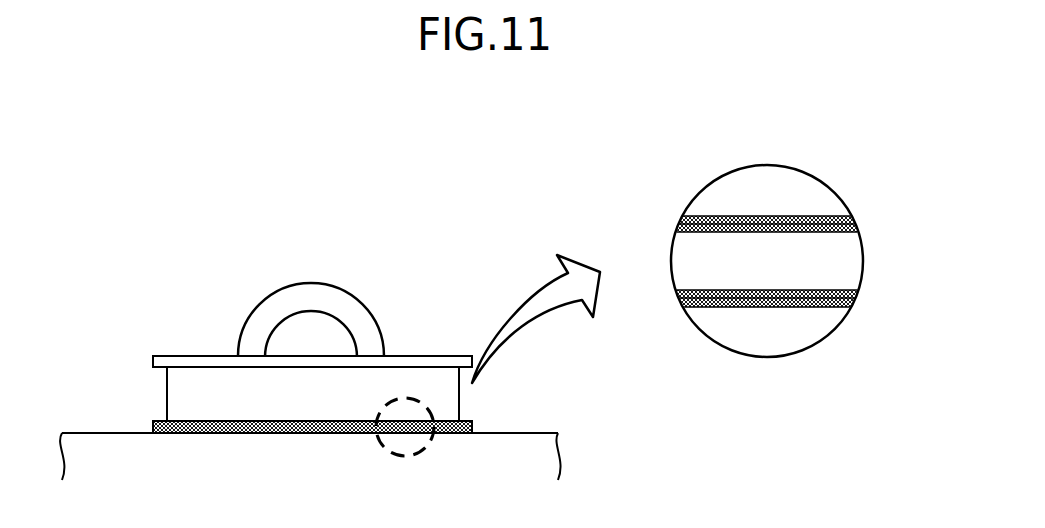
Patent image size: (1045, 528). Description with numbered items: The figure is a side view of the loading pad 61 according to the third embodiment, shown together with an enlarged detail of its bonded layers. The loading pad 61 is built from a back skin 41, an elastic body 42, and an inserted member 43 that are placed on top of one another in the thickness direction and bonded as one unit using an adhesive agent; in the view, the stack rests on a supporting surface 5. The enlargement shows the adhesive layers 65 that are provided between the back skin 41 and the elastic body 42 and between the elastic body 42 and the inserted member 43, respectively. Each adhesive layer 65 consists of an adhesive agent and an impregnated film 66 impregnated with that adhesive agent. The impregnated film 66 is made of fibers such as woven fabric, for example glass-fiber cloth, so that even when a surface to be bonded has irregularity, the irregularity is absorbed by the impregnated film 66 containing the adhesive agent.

The back skin 41 is at (148, 352).
The elastic body 42 is at (167, 388).
The inserted member 43 is at (153, 425).
The substrate 5 is at (528, 432).
The loading pad 61 is at (430, 288).
The adhesive layer 65 is at (868, 228).
The impregnated film 66 is at (682, 220).